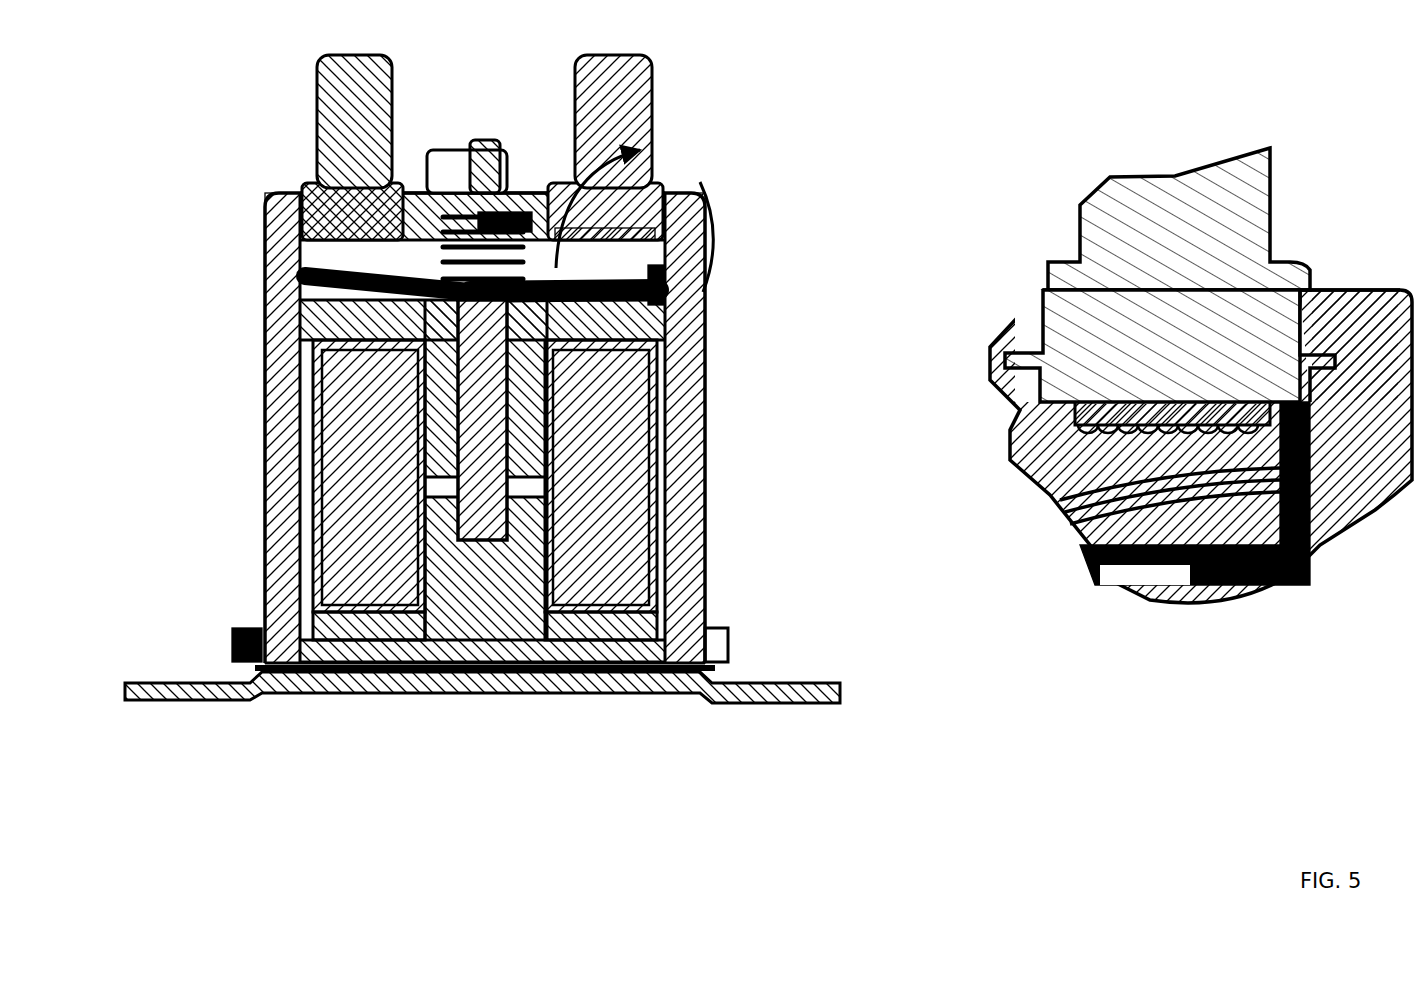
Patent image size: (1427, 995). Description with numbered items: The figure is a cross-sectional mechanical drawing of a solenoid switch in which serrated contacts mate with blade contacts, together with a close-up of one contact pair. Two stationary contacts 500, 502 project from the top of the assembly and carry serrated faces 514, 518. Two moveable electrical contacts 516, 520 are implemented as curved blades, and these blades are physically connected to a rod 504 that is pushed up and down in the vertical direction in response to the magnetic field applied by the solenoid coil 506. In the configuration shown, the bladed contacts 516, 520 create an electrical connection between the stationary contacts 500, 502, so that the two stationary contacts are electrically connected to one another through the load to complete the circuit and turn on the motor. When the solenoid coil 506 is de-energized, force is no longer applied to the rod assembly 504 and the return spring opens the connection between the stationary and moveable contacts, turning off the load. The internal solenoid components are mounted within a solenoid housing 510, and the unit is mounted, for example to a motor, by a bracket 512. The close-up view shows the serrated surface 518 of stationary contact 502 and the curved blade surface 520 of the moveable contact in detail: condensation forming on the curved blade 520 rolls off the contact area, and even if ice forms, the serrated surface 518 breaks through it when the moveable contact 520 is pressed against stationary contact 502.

The stationary contact 500 is at (352, 147).
The stationary contact 502 is at (980, 329).
The rod 504 is at (486, 470).
The solenoid coil 506 is at (485, 490).
The solenoid housing 510 is at (686, 427).
The bracket 512 is at (772, 683).
The serrated face 514 is at (300, 233).
The moveable contact 516 is at (300, 270).
The serrated surface 518 is at (672, 235).
The moveable contact 520 is at (672, 272).